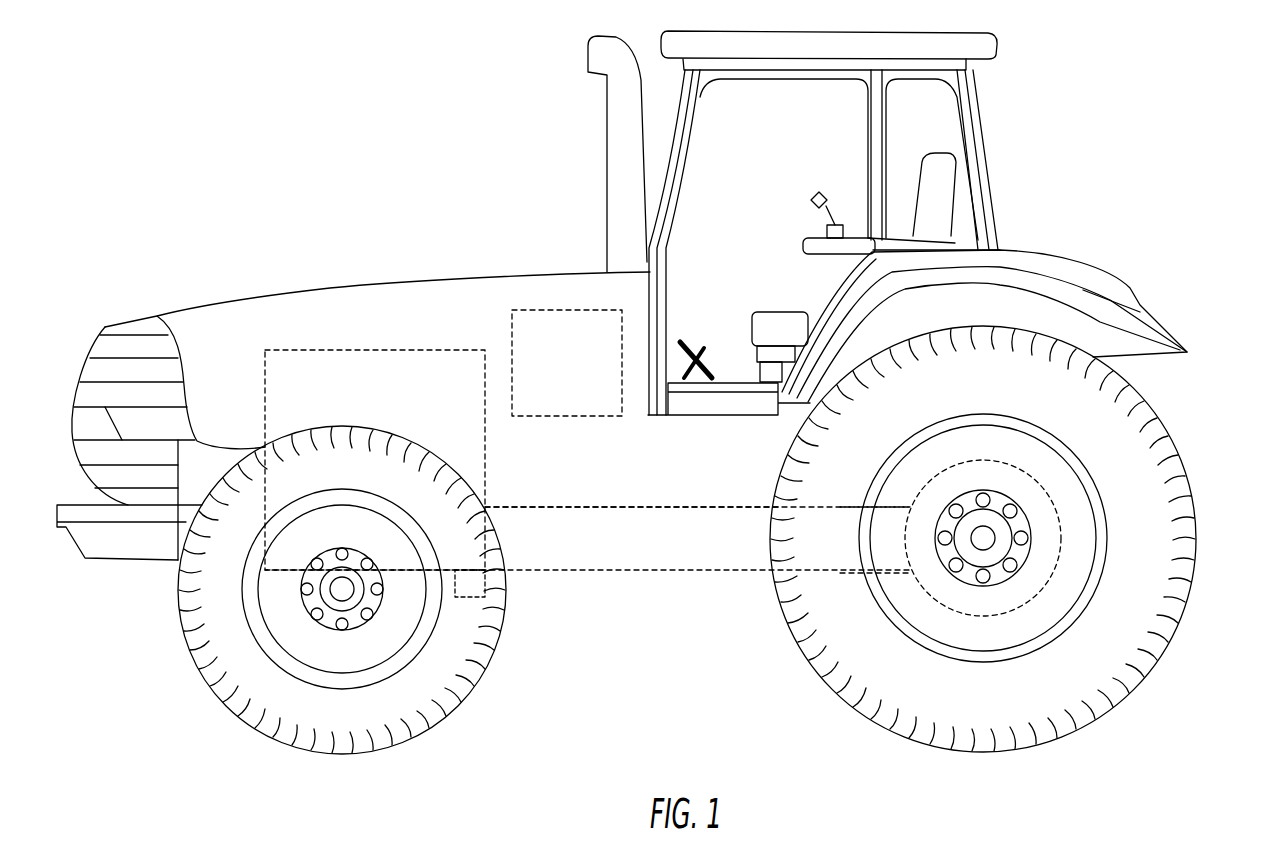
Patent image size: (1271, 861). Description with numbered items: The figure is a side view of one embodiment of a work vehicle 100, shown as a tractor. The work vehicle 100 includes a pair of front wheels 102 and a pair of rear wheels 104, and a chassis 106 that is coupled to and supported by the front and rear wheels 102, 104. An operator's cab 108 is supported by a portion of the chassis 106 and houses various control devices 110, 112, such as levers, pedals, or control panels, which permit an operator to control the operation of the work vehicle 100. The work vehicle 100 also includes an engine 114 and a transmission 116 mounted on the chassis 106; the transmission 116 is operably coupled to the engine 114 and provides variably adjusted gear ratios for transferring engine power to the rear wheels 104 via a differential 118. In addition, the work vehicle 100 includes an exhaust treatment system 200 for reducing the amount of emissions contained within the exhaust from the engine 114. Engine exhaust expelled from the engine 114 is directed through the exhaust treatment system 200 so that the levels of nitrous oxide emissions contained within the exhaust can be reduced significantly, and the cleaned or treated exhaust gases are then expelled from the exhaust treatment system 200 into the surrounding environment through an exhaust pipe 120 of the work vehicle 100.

The work vehicle 100 is at (262, 170).
The front wheels 102 is at (178, 618).
The rear wheels 104 is at (1190, 568).
The chassis 106 is at (583, 573).
The operator's cab 108 is at (992, 178).
The control device 110 is at (818, 196).
The control device 112 is at (707, 363).
The engine 114 is at (343, 348).
The transmission 116 is at (647, 505).
The differential 118 is at (1060, 513).
The exhaust pipe 120 is at (612, 138).
The exhaust treatment system 200 is at (543, 309).